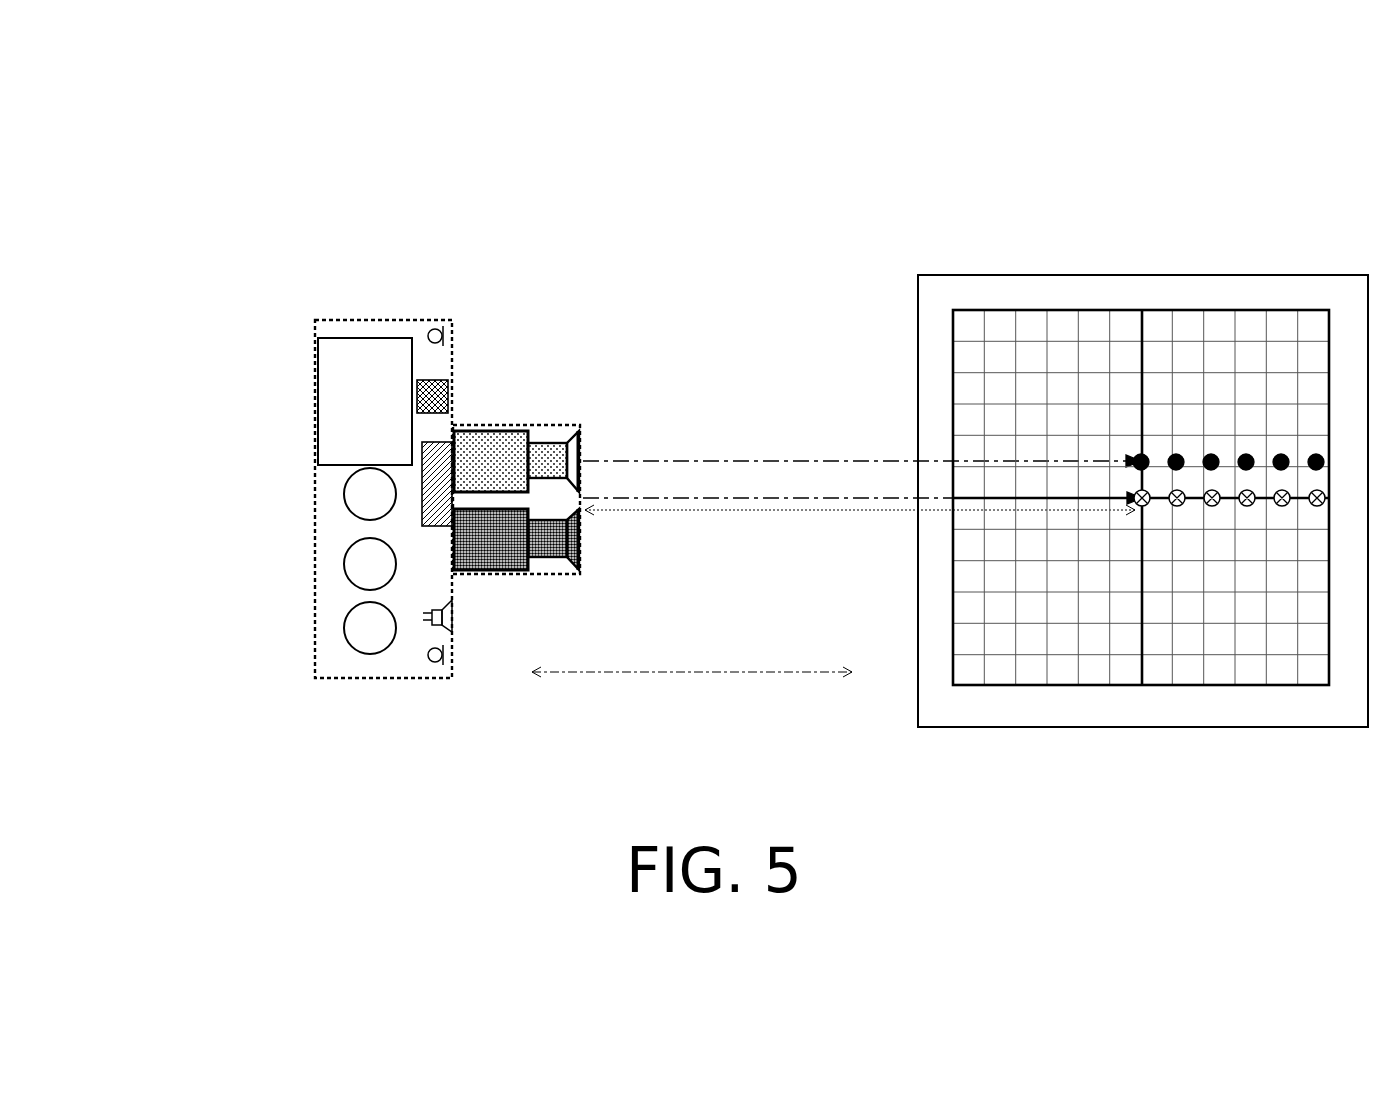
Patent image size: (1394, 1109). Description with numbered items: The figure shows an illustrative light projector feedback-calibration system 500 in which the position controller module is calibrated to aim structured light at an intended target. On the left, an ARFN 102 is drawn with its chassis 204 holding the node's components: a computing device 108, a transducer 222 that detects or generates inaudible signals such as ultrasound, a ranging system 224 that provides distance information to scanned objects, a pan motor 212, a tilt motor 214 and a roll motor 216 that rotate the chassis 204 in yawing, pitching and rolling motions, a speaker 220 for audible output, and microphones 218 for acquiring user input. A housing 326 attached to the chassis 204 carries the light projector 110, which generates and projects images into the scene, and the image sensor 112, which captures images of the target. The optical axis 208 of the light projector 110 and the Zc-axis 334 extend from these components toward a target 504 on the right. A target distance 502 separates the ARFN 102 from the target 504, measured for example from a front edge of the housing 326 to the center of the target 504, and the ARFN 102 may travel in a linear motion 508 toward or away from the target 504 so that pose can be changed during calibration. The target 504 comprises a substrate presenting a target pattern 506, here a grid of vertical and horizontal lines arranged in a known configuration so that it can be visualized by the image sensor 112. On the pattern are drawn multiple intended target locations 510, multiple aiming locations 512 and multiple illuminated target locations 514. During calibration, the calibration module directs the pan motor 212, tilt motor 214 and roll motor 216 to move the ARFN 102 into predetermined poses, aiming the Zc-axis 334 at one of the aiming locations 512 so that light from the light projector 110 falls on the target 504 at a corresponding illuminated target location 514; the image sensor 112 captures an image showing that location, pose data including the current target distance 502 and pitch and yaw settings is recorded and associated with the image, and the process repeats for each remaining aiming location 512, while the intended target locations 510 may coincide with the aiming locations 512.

The light projector feedback-calibration system 500 is at (749, 101).
The ARFN 102 is at (298, 265).
The chassis 204 is at (363, 317).
The housing 326 is at (408, 318).
The transducer 222 is at (425, 394).
The ranging system 224 is at (422, 443).
The computing device 108 is at (354, 454).
The pan motor 212 is at (345, 491).
The tilt motor 214 is at (345, 563).
The roll motor 216 is at (345, 627).
The speaker 220 is at (428, 626).
The microphone 218 is at (430, 659).
The light projector 110 is at (517, 438).
The image sensor 112 is at (507, 573).
The optical axis 208 is at (627, 459).
The Zc-axis 334 is at (665, 498).
The target distance 502 is at (860, 530).
The linear motion 508 is at (692, 694).
The target 504 is at (918, 392).
The target pattern 506 is at (962, 342).
The illuminated target locations 514 is at (1316, 463).
The intended target locations 510 is at (1316, 506).
The aiming locations 512 is at (1318, 506).